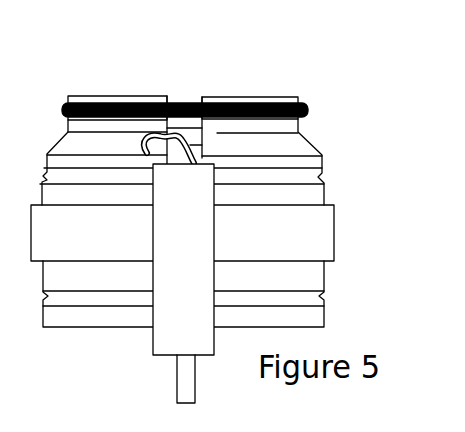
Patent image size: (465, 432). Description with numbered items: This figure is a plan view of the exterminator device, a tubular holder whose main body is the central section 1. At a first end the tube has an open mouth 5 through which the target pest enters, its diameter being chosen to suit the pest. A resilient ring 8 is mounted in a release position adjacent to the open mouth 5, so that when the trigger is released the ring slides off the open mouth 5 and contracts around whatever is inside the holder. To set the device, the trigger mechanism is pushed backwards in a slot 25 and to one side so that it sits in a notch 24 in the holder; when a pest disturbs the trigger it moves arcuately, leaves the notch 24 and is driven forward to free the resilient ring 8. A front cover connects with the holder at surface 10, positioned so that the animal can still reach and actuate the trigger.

The central section 1 is at (372, 207).
The open mouth 5 is at (249, 97).
The resilient ring 8 is at (311, 108).
The surface 10 is at (322, 163).
The notch 24 is at (150, 145).
The slot 25 is at (185, 82).